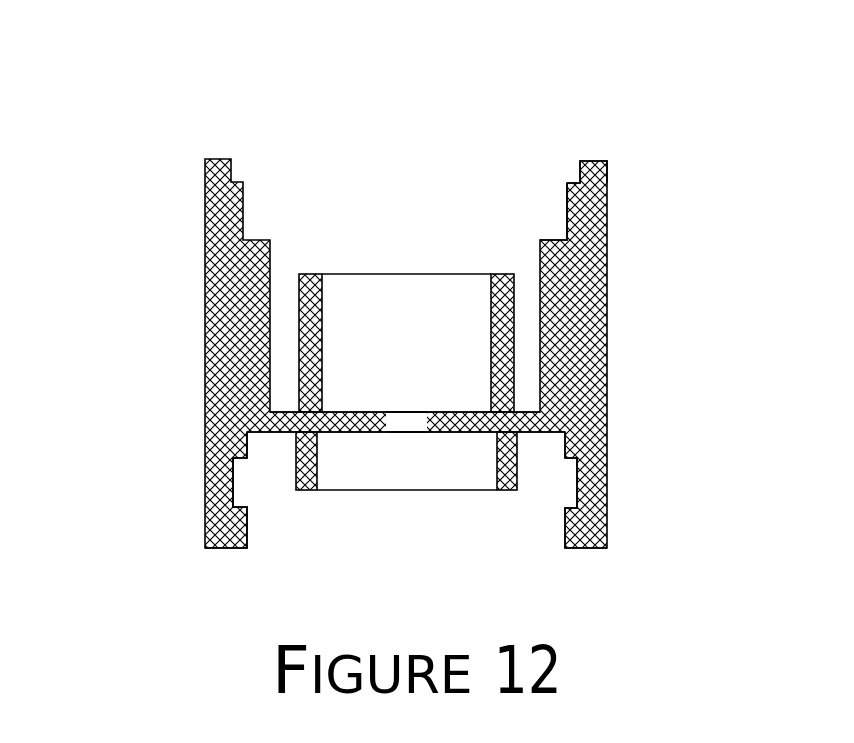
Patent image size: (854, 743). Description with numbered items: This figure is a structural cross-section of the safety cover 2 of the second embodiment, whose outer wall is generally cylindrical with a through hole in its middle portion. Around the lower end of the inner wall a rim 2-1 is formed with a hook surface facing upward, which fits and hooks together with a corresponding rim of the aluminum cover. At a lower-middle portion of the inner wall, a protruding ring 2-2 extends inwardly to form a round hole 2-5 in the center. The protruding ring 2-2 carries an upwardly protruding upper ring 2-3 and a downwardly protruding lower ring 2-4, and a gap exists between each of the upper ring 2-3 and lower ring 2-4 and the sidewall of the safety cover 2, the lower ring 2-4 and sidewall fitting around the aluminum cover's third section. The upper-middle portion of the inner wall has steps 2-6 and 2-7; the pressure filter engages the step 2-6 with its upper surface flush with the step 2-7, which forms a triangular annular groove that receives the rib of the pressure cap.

The safety cover 2 is at (213, 159).
The rim 2-1 is at (570, 511).
The protruding ring 2-2 is at (428, 420).
The upper ring 2-3 is at (512, 365).
The lower ring 2-4 is at (517, 473).
The round hole 2-5 is at (408, 425).
The step 2-6 is at (559, 240).
The step 2-7 is at (570, 184).